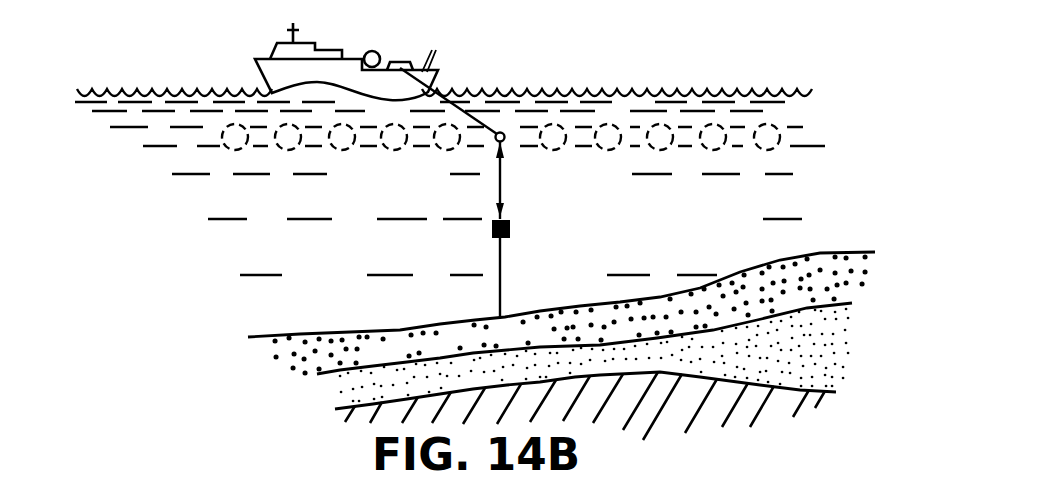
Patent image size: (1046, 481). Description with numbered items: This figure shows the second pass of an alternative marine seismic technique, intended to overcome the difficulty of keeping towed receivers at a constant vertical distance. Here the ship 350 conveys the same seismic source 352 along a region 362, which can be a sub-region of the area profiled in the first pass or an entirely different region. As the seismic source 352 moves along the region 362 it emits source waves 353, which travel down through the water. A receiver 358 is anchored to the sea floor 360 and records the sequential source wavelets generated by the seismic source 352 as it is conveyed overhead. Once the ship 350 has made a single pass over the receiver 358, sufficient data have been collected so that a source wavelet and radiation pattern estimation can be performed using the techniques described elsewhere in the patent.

The ship 350 is at (329, 50).
The seismic source 352 is at (494, 140).
The source waves 353 is at (512, 187).
The receiver 358 is at (511, 227).
The sea floor 360 is at (597, 302).
The region 362 is at (348, 291).